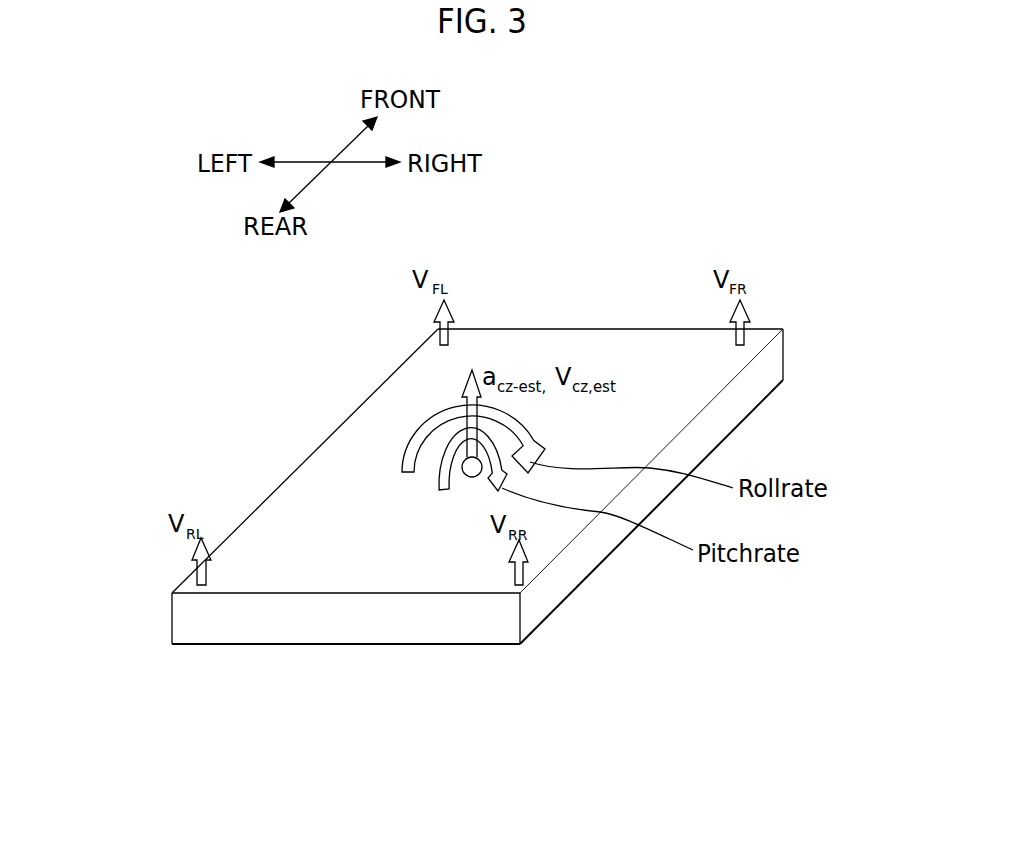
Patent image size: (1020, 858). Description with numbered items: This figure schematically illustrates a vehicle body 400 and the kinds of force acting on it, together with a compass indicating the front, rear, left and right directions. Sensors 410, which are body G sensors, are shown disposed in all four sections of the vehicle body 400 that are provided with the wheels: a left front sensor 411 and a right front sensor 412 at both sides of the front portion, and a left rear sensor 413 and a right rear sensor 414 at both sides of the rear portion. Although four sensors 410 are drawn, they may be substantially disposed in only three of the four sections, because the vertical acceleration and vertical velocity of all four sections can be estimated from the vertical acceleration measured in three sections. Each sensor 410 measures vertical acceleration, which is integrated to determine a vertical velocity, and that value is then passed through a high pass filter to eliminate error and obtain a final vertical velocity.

The vehicle body 400 is at (287, 460).
The sensor 410 is at (472, 532).
The left front sensor 411 is at (437, 331).
The right front sensor 412 is at (772, 362).
The left rear sensor 413 is at (172, 617).
The right rear sensor 414 is at (527, 610).